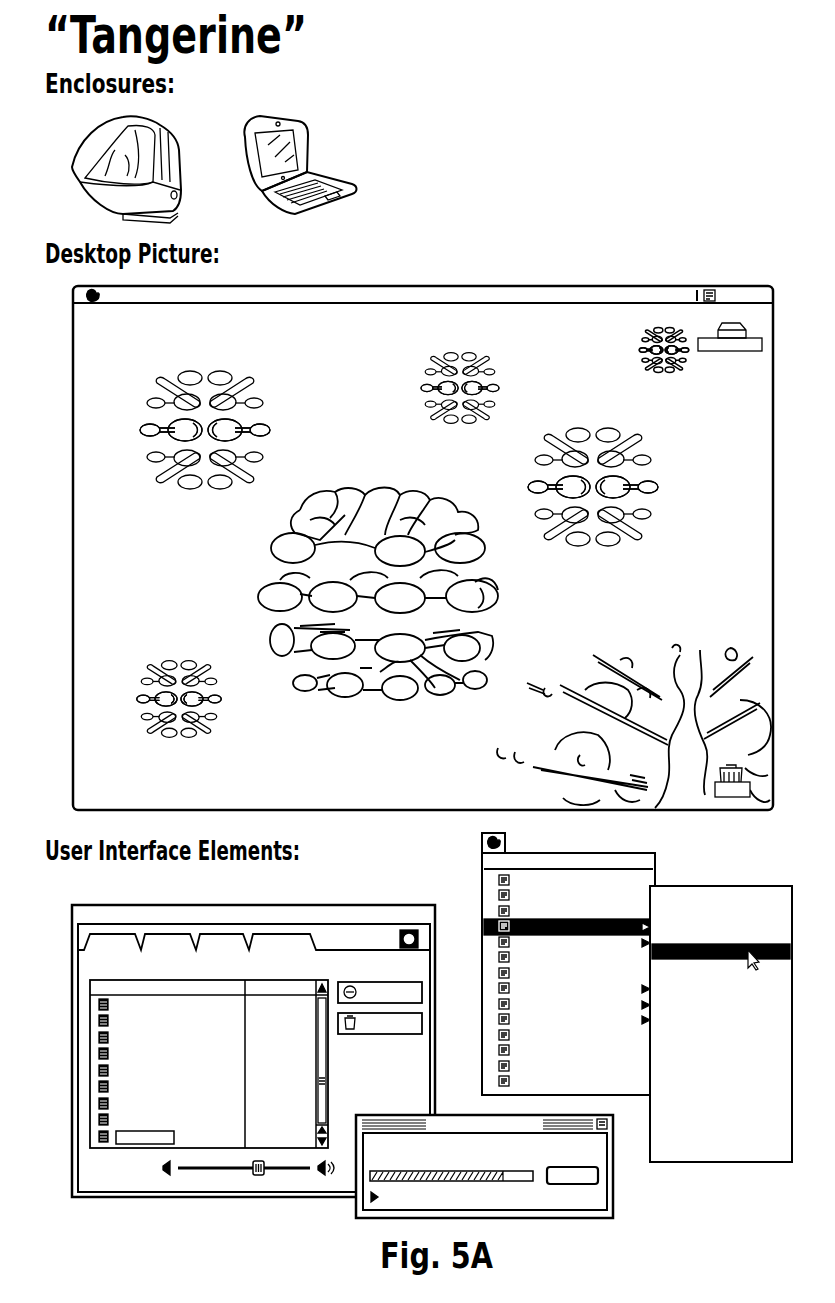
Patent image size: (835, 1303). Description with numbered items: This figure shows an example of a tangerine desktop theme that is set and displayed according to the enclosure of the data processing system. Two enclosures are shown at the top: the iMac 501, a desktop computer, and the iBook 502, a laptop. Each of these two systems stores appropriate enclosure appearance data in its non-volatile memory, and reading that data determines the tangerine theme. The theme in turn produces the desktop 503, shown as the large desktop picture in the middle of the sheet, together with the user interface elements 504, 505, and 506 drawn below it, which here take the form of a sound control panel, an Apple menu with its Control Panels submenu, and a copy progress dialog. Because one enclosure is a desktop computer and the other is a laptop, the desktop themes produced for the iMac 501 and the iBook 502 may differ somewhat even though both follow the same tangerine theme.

The iMac 501 is at (156, 120).
The iBook 502 is at (300, 121).
The desktop 503 is at (608, 286).
The user interface element 504 is at (322, 905).
The user interface element 505 is at (620, 852).
The user interface element 506 is at (613, 1188).